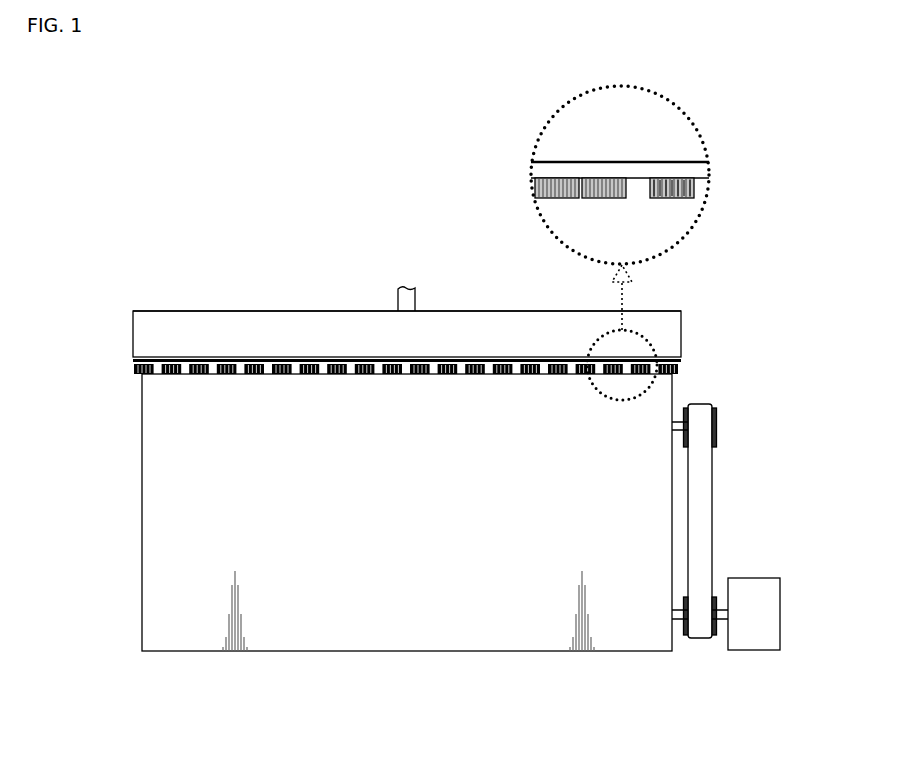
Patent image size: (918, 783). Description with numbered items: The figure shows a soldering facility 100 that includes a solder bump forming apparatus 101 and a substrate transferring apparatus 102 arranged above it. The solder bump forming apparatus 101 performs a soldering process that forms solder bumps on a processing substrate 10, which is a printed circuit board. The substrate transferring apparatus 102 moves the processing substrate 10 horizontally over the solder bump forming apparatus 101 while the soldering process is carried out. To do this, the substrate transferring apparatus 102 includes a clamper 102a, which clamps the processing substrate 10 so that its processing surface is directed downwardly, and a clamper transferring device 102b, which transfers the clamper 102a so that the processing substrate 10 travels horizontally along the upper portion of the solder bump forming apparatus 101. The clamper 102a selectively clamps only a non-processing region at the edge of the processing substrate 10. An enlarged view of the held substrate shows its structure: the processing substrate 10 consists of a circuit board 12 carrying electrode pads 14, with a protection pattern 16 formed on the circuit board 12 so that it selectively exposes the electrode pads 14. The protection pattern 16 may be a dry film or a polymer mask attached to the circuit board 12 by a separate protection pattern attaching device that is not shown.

The soldering facility 100 is at (56, 88).
The solder bump forming apparatus 101 is at (120, 494).
The substrate transferring apparatus 102 is at (345, 315).
The clamper 102a is at (270, 322).
The clamper transferring device 102b is at (410, 300).
The processing substrate 10 is at (677, 216).
The circuit board 12 is at (695, 170).
The electrode pad 14 is at (637, 180).
The protection pattern 16 is at (690, 187).